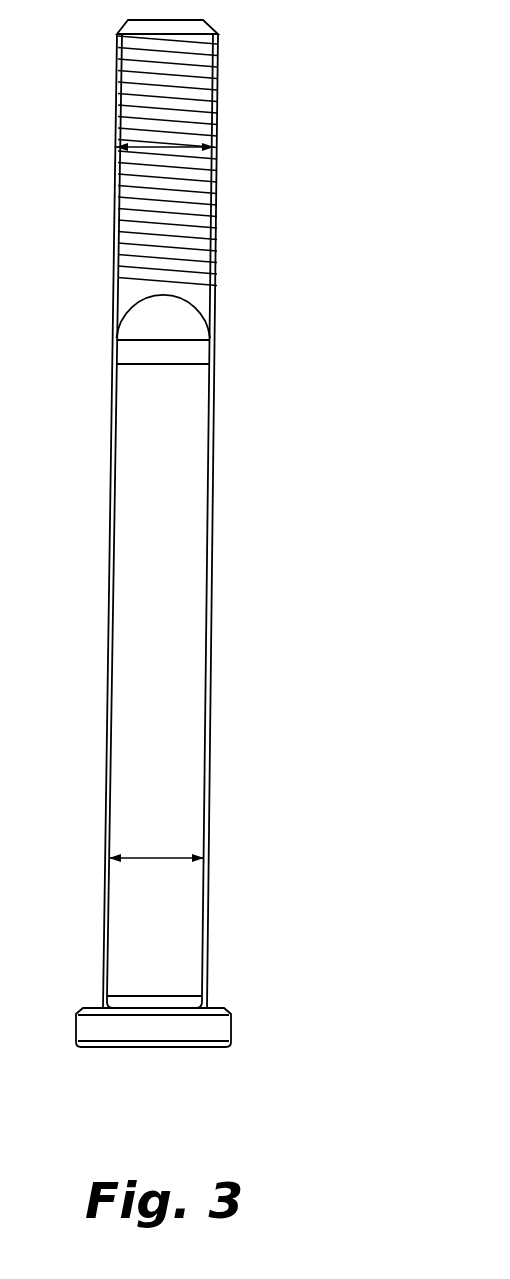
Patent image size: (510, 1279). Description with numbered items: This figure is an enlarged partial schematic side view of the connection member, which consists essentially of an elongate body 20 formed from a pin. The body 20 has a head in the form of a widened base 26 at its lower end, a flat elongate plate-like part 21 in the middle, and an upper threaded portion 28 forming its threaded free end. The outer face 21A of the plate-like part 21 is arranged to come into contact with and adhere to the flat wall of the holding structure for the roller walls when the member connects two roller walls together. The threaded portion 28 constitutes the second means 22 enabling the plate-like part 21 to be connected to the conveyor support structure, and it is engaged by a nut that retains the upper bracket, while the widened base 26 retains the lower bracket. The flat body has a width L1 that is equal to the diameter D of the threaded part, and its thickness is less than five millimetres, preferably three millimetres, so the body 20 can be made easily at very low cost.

The elongate body 20 is at (195, 567).
The plate-like part 21 is at (116, 674).
The outer face 21A is at (182, 763).
The second means 22 is at (190, 180).
The widened base 26 is at (99, 1033).
The threaded portion 28 is at (157, 240).
The diameter of the threaded part D is at (150, 147).
The width of the flat body L1 is at (152, 858).